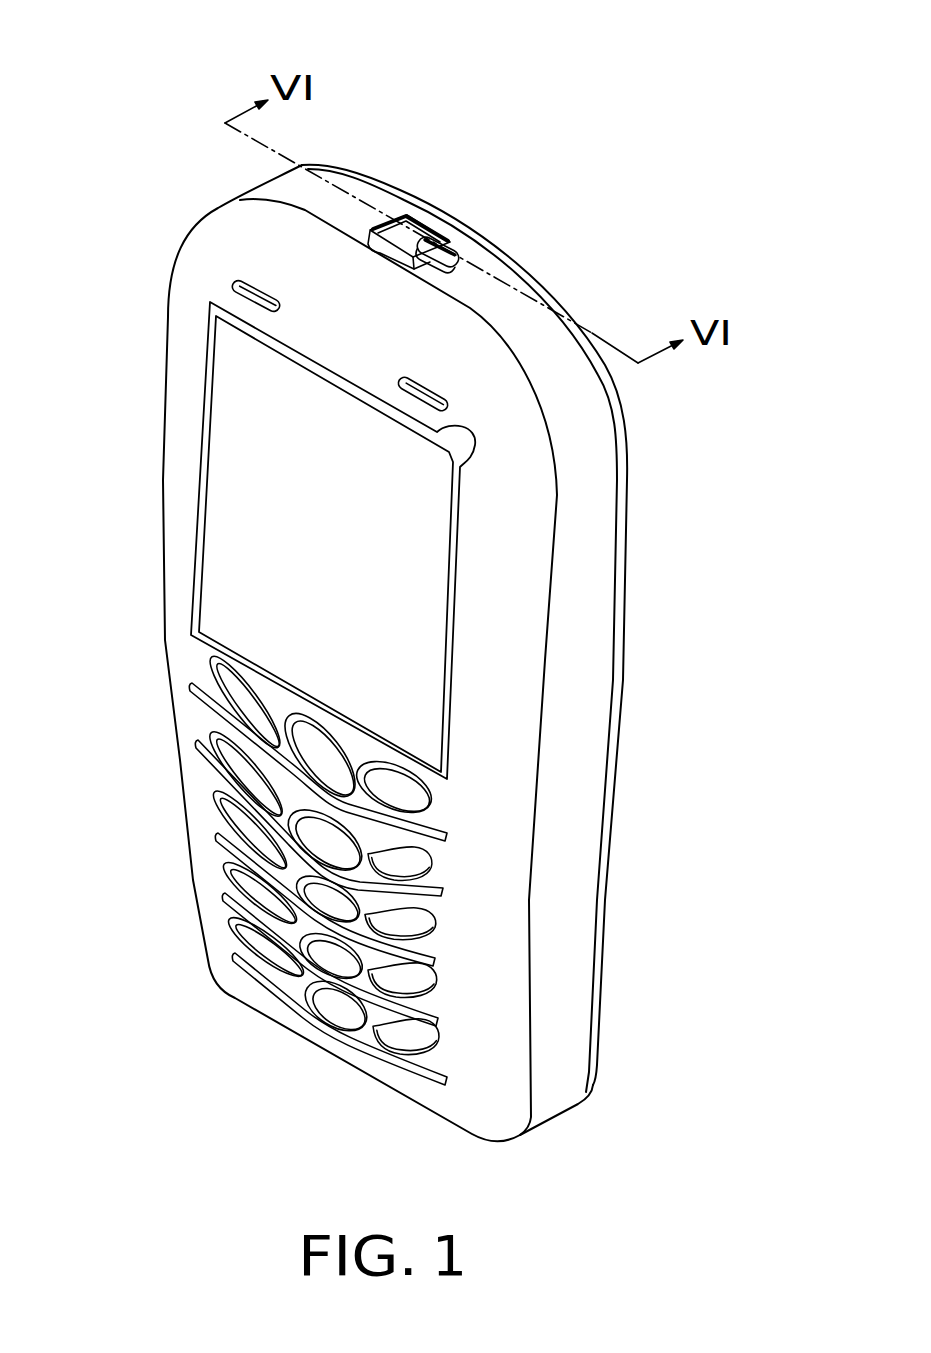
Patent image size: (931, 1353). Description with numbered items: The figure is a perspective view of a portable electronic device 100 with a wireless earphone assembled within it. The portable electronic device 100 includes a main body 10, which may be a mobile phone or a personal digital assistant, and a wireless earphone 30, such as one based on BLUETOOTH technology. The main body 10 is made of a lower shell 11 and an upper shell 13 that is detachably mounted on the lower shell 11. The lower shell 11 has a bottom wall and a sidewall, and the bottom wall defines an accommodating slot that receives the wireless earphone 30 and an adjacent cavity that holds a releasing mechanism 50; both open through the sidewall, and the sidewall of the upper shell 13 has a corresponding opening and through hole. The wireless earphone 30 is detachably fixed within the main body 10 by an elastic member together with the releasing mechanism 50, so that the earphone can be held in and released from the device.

The portable electronic device 100 is at (148, 64).
The main body 10 is at (755, 678).
The lower shell 11 is at (618, 711).
The upper shell 13 is at (507, 795).
The wireless earphone 30 is at (412, 232).
The releasing mechanism 50 is at (455, 238).